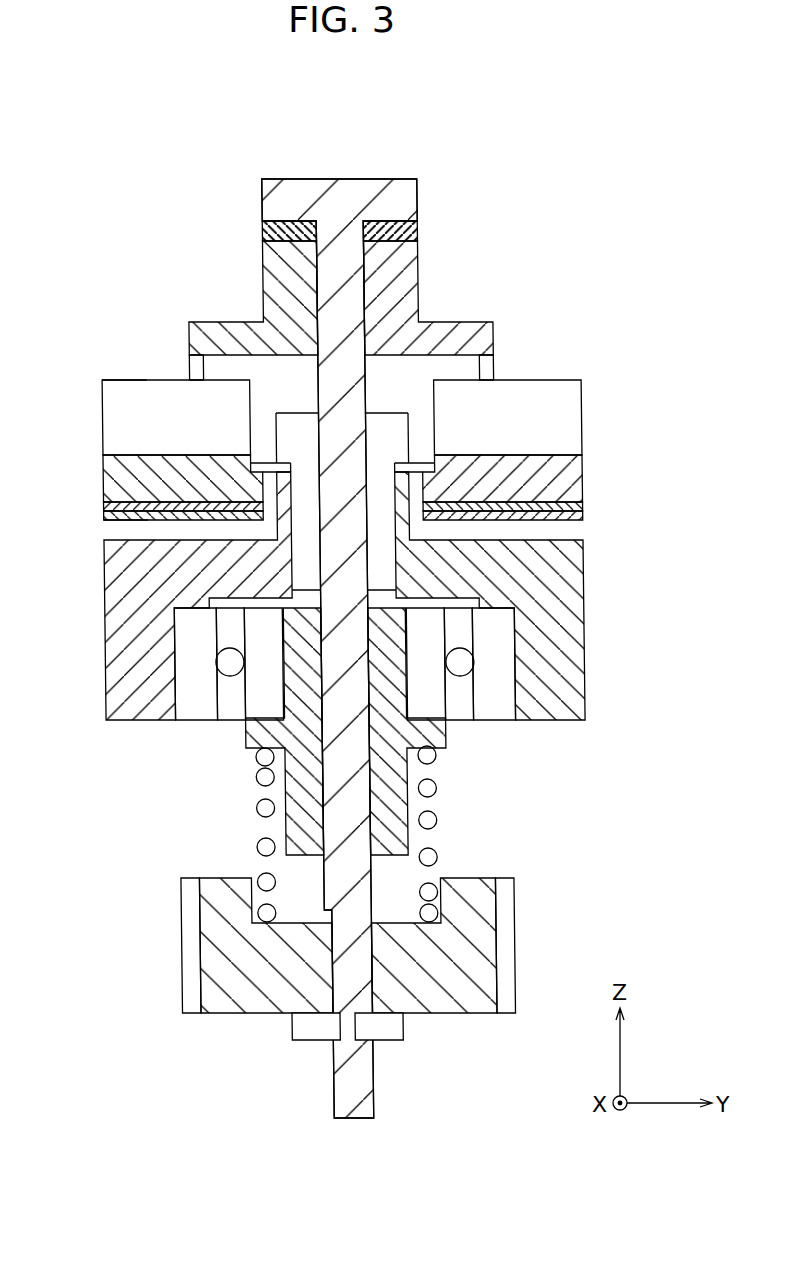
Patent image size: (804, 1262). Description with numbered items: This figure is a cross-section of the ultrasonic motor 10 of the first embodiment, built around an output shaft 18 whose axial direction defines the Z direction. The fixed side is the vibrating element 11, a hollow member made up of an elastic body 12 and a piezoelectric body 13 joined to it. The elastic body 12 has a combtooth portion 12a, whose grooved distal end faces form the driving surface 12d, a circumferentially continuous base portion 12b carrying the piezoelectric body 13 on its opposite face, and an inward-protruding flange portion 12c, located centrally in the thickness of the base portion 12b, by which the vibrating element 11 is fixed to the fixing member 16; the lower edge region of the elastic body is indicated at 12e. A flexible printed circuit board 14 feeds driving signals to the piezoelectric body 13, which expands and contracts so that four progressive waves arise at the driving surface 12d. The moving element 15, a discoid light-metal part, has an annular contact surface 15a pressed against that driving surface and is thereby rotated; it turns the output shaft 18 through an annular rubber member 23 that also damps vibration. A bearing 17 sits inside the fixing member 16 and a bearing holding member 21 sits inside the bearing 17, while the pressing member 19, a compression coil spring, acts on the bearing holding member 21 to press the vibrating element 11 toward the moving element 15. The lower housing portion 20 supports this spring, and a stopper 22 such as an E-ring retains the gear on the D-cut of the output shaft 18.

The ultrasonic motor 10 is at (602, 256).
The vibrating element 11 is at (396, 431).
The elastic body 12 is at (377, 426).
The combtooth portion 12a is at (563, 430).
The base portion 12b is at (568, 468).
The flange portion 12c is at (417, 460).
The driving surface 12d is at (117, 380).
The lower edge portion 12e is at (108, 513).
The piezoelectric body 13 is at (567, 505).
The flexible printed circuit board 14 is at (568, 518).
The moving element 15 is at (270, 338).
The contact surface 15a is at (200, 382).
The fixing member 16 is at (568, 597).
The bearing 17 is at (495, 700).
The output shaft 18 is at (323, 268).
The pressing member 19 is at (436, 822).
The base 20 is at (465, 1000).
The bearing holding member 21 is at (283, 728).
The stopper 22 is at (390, 1030).
The rubber member 23 is at (275, 232).